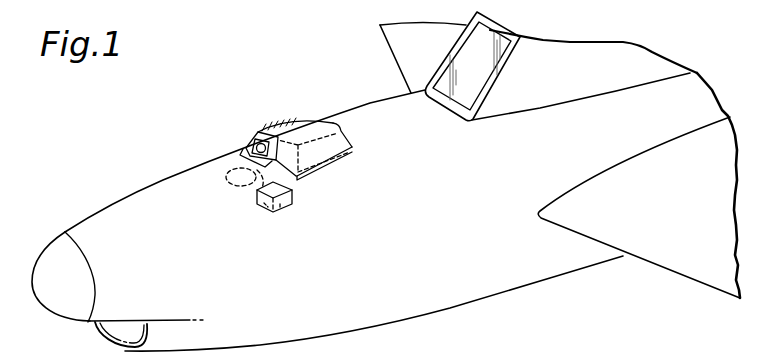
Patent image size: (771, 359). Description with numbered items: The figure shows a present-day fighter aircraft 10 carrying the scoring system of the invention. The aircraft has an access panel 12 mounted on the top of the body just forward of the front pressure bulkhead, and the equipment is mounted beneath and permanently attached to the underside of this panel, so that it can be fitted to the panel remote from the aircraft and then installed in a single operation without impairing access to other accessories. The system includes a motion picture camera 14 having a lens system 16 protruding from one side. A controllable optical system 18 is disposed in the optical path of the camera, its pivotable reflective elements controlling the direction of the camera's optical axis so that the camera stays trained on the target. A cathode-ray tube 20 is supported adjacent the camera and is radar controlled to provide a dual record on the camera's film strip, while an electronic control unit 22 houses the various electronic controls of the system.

The fighter aircraft 10 is at (136, 237).
The access panel 12 is at (265, 130).
The motion picture camera 14 is at (228, 181).
The lens system 16 is at (307, 174).
The controllable optical system 18 is at (346, 147).
The cathode-ray tube 20 is at (257, 187).
The electronic control unit 22 is at (266, 212).